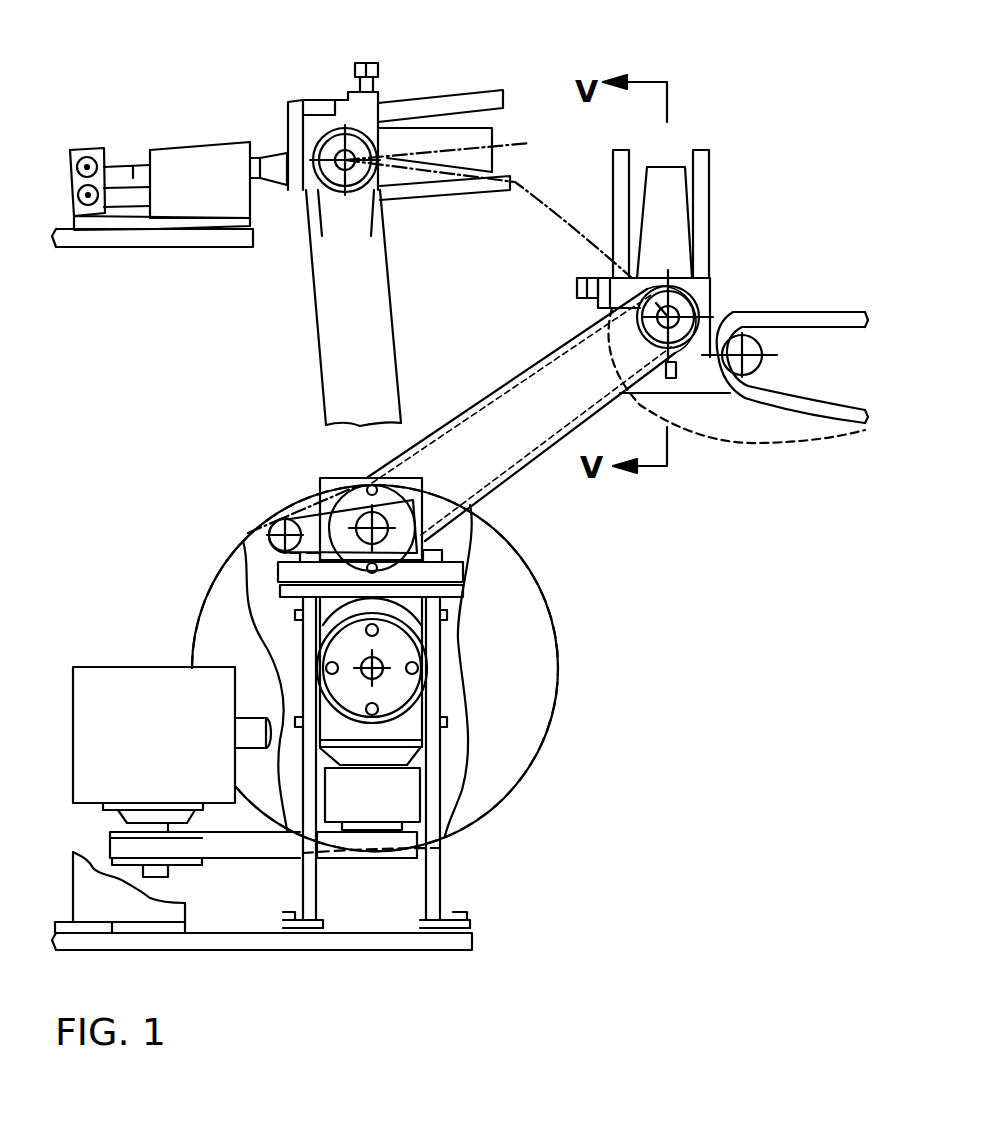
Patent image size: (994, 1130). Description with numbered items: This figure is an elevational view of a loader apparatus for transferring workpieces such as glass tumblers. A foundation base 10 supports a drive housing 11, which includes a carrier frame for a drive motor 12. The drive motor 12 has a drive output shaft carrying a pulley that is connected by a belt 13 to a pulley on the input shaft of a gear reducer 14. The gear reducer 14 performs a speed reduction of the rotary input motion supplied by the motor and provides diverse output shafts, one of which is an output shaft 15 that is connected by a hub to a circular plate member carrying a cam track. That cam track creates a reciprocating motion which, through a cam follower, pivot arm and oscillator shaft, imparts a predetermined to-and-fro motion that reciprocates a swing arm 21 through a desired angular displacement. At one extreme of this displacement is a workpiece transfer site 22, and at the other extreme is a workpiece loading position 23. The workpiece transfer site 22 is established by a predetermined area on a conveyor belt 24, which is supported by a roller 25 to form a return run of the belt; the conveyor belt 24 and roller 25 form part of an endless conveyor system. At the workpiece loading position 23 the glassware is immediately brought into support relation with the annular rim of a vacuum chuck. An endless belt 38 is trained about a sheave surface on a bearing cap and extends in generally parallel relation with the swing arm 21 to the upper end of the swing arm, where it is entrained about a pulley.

The foundation base 10 is at (472, 937).
The drive housing 11 is at (440, 870).
The drive motor 12 is at (142, 665).
The belt 13 is at (233, 862).
The gear reducer 14 is at (420, 797).
The output shaft 15 is at (385, 667).
The swing arm 21 is at (567, 343).
The workpiece transfer site 22 is at (718, 306).
The workpiece loading position 23 is at (335, 92).
The conveyor belt 24 is at (808, 313).
The roller 25 is at (762, 362).
The endless belt 38 is at (422, 442).